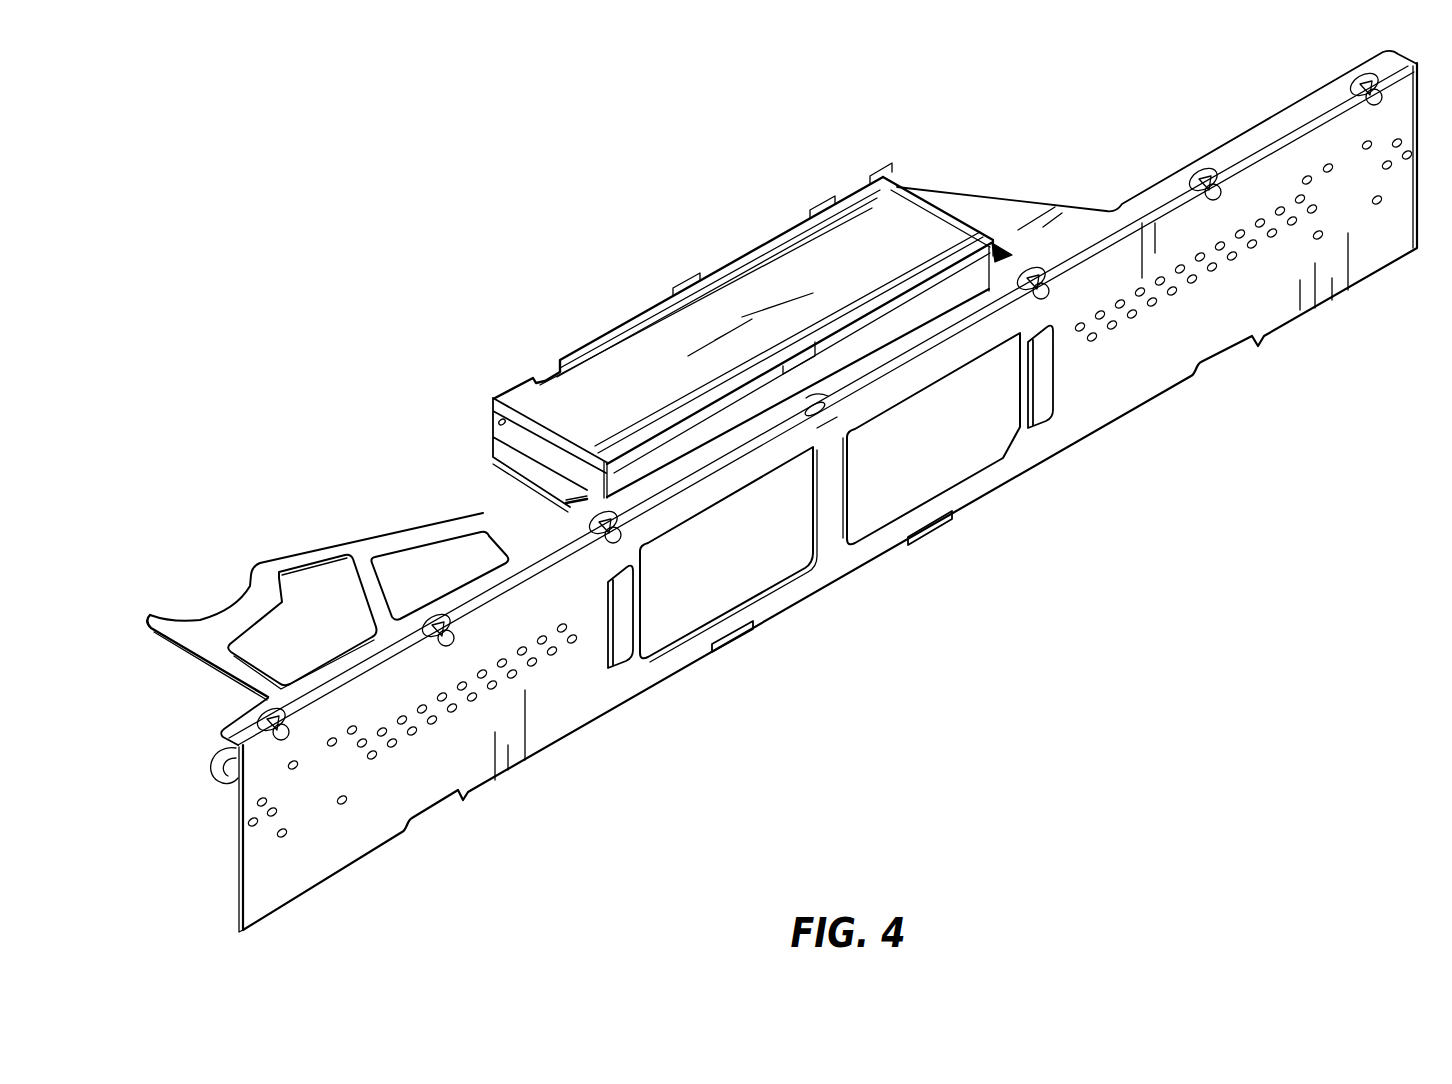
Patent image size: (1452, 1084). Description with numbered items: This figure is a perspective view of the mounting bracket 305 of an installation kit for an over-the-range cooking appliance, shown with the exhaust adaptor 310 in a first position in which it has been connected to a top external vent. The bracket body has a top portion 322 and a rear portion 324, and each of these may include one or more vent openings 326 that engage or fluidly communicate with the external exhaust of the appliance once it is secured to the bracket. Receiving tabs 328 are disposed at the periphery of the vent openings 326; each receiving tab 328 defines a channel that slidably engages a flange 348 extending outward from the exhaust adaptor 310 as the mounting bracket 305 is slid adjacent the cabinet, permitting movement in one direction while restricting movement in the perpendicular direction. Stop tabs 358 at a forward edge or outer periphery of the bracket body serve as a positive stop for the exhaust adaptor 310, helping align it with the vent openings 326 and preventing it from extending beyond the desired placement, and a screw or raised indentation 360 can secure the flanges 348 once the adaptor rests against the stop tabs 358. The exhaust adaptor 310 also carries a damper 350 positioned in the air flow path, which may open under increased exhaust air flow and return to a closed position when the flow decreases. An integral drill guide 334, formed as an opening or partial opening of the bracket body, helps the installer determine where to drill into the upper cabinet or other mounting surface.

The mounting bracket 305 is at (1028, 214).
The exhaust adaptor 310 is at (611, 308).
The top portion 322 is at (1075, 235).
The rear portion 324 is at (568, 722).
The vent opening 326 is at (767, 570).
The receiving tab 328 is at (481, 516).
The drill guide 334 is at (206, 482).
The flange 348 is at (588, 492).
The damper 350 is at (755, 310).
The stop tab 358 is at (723, 650).
The raised indentation 360 is at (847, 410).